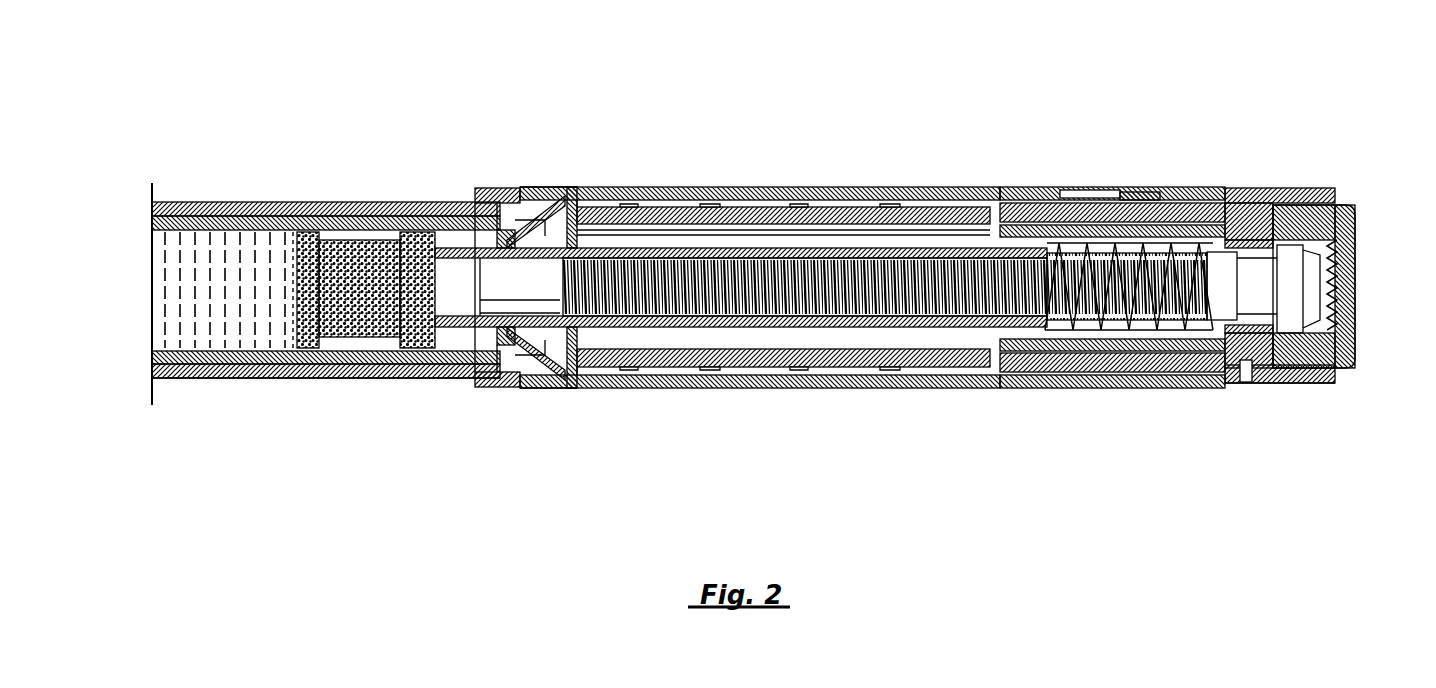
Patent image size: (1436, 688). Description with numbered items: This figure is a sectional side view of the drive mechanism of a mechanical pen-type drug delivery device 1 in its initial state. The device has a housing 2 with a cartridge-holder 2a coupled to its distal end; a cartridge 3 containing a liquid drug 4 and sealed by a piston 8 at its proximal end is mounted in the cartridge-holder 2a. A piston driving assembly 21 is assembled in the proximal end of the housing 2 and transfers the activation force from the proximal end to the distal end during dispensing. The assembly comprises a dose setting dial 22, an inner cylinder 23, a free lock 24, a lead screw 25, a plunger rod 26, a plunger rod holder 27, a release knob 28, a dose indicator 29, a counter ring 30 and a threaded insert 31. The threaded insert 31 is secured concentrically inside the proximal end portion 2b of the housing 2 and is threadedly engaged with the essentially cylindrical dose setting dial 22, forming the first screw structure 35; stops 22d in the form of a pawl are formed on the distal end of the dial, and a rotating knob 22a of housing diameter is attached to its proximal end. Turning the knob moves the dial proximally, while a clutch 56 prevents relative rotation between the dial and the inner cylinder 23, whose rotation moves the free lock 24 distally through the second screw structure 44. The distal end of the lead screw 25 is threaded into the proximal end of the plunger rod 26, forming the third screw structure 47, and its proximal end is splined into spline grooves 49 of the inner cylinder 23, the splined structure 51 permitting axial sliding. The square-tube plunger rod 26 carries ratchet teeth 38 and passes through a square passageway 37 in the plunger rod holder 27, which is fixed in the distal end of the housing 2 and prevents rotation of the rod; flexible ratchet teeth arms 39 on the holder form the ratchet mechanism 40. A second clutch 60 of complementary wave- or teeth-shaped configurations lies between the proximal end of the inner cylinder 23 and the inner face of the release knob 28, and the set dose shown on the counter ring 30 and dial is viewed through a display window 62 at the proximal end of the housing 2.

The drug delivery device 1 is at (694, 128).
The housing 2 is at (822, 186).
The cartridge-holder 2a is at (275, 379).
The proximal end portion of the housing 2b is at (1190, 188).
The cartridge 3 is at (248, 204).
The liquid drug 4 is at (222, 340).
The piston 8 is at (333, 337).
The piston driving assembly 21 is at (870, 232).
The dose setting dial 22 is at (965, 206).
The rotating knob 22a is at (1290, 188).
The stops 22d is at (583, 200).
The inner cylinder 23 is at (1240, 190).
The free lock 24 is at (1252, 389).
The lead screw 25 is at (840, 389).
The plunger rod 26 is at (742, 389).
The plunger rod holder 27 is at (545, 186).
The release knob 28 is at (1353, 232).
The dose indicator 29 is at (1083, 178).
The counter ring 30 is at (1110, 200).
The threaded insert 31 is at (1175, 190).
The first screw structure 35 is at (1205, 200).
The square passageway 37 is at (600, 250).
The ratchet teeth 38 is at (470, 248).
The flexible ratchet teeth arms 39 is at (515, 248).
The ratchet mechanism 40 is at (495, 292).
The second screw structure 44 is at (1228, 389).
The third screw structure 47 is at (1030, 388).
The spline grooves 49 is at (1325, 389).
The splined structure 51 is at (1298, 389).
The clutch 56 is at (1263, 395).
The second clutch 60 is at (1360, 288).
The display window 62 is at (1138, 195).